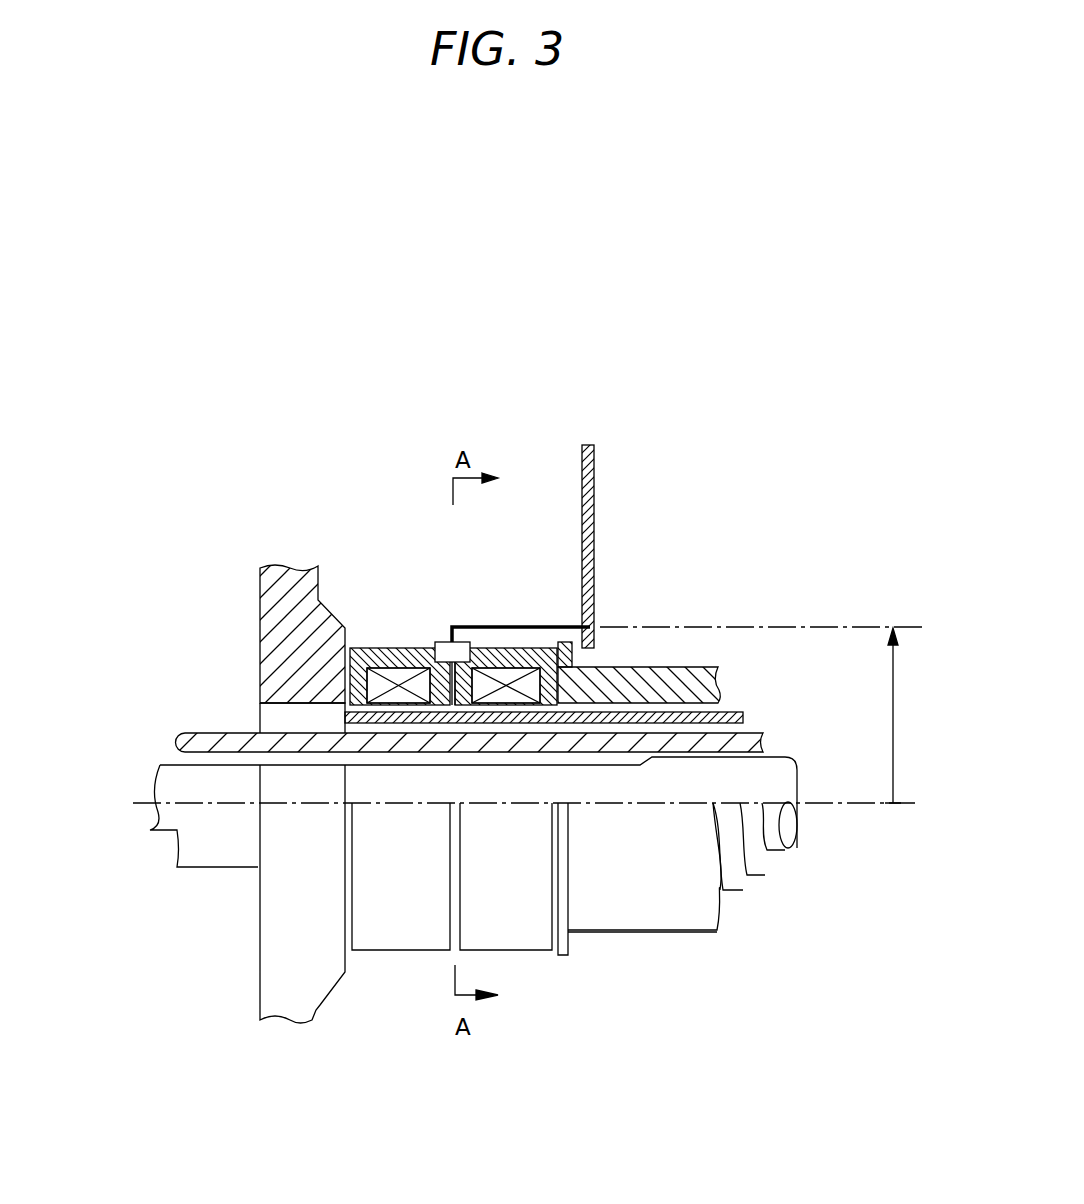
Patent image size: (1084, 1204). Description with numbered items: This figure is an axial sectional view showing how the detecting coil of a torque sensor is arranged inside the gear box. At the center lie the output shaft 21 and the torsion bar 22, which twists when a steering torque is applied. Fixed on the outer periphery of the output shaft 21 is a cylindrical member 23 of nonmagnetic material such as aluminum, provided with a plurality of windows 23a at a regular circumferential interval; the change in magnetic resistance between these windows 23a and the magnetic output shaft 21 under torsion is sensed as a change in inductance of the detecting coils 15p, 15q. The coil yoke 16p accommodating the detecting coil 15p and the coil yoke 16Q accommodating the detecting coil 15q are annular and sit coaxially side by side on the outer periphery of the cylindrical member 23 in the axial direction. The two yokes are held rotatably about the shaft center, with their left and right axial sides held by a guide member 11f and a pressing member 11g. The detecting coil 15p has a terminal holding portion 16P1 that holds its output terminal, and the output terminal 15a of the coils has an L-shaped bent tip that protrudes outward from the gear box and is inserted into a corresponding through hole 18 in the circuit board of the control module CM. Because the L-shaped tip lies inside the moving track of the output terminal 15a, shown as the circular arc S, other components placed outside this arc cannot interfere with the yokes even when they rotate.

The guide member 11f is at (292, 638).
The pressing member 11g is at (668, 672).
The detecting coil 15p is at (390, 648).
The detecting coil 15q is at (502, 678).
The output terminal 15a is at (567, 622).
The coil yoke 16p is at (415, 657).
The coil yoke 16Q is at (533, 653).
The terminal holding portion 16P1 is at (443, 640).
The through hole 18 is at (597, 622).
The output shaft 21 is at (190, 740).
The torsion bar 22 is at (172, 786).
The cylindrical member 23 is at (745, 718).
The windows 23a is at (415, 713).
The control module CM is at (596, 500).
The circular arc S is at (860, 625).